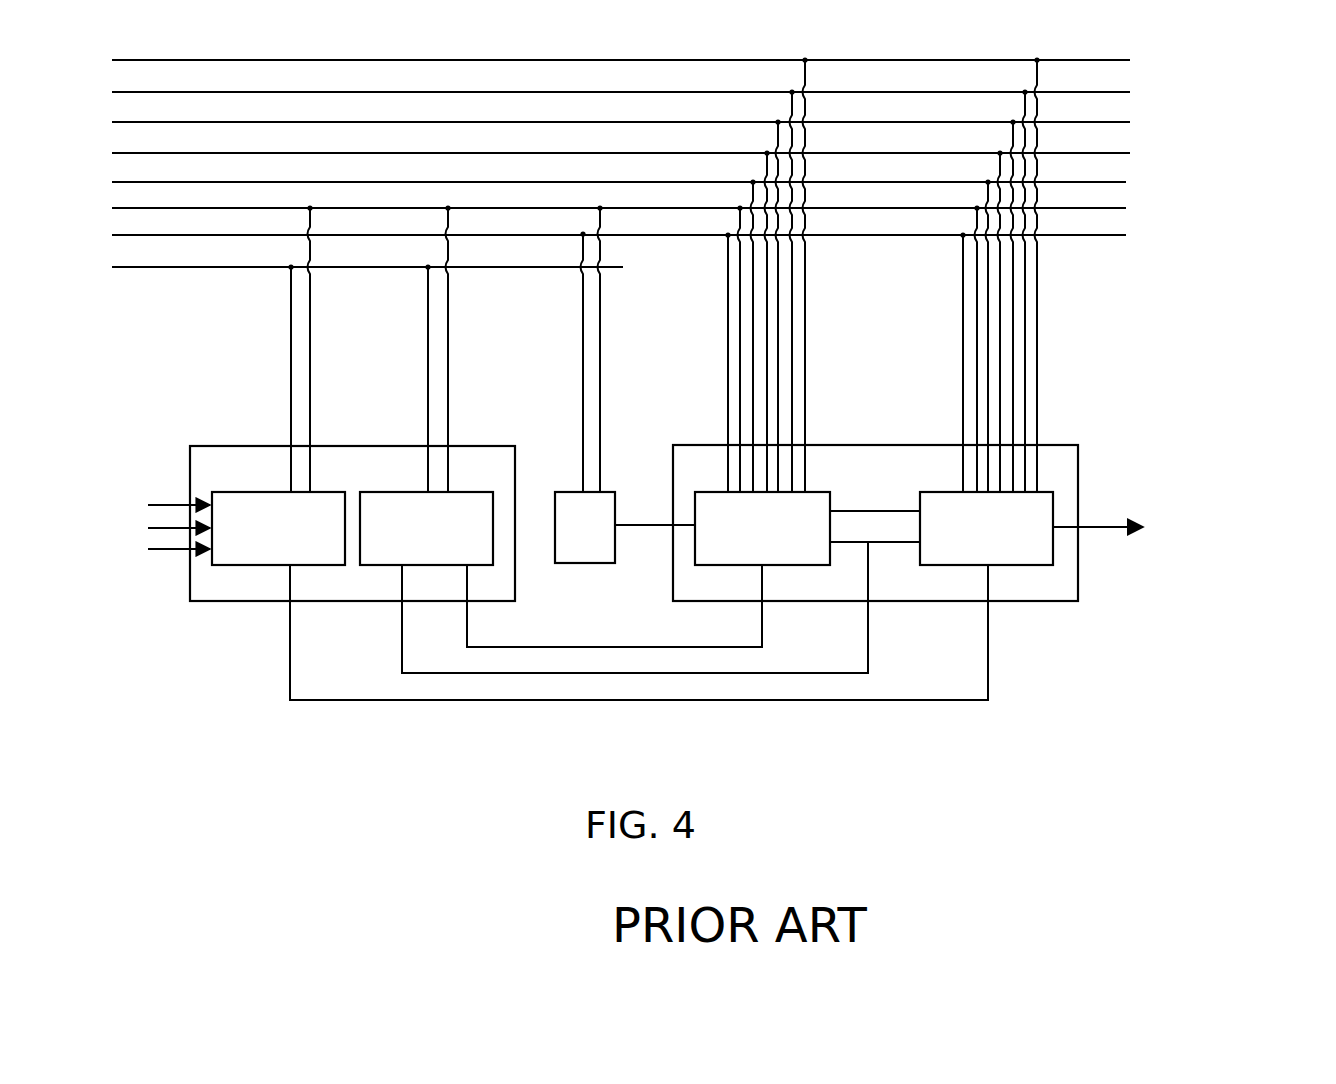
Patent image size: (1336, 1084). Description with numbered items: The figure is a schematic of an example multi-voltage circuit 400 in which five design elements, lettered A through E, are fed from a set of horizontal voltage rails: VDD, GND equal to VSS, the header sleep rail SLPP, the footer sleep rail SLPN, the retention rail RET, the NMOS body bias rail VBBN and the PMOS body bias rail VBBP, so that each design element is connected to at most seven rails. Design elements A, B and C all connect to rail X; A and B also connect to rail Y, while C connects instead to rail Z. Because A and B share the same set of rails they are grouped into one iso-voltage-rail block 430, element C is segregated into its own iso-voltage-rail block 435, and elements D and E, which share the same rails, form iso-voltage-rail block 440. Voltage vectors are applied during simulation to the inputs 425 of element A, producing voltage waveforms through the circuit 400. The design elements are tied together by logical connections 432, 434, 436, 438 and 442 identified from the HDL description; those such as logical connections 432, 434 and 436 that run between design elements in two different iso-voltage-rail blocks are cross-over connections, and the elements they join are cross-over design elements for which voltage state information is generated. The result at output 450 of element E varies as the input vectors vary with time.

The circuit 400 is at (368, 737).
The inputs 425 is at (145, 527).
The iso-voltage-rail block 430 is at (245, 602).
The logical connection 432 is at (647, 521).
The logical connection 434 is at (752, 646).
The iso-voltage-rail block 435 is at (601, 567).
The logical connection 436 is at (860, 673).
The logical connection 438 is at (975, 700).
The iso-voltage-rail block 440 is at (1040, 602).
The logical connection 442 is at (893, 510).
The output signal 450 is at (1121, 528).